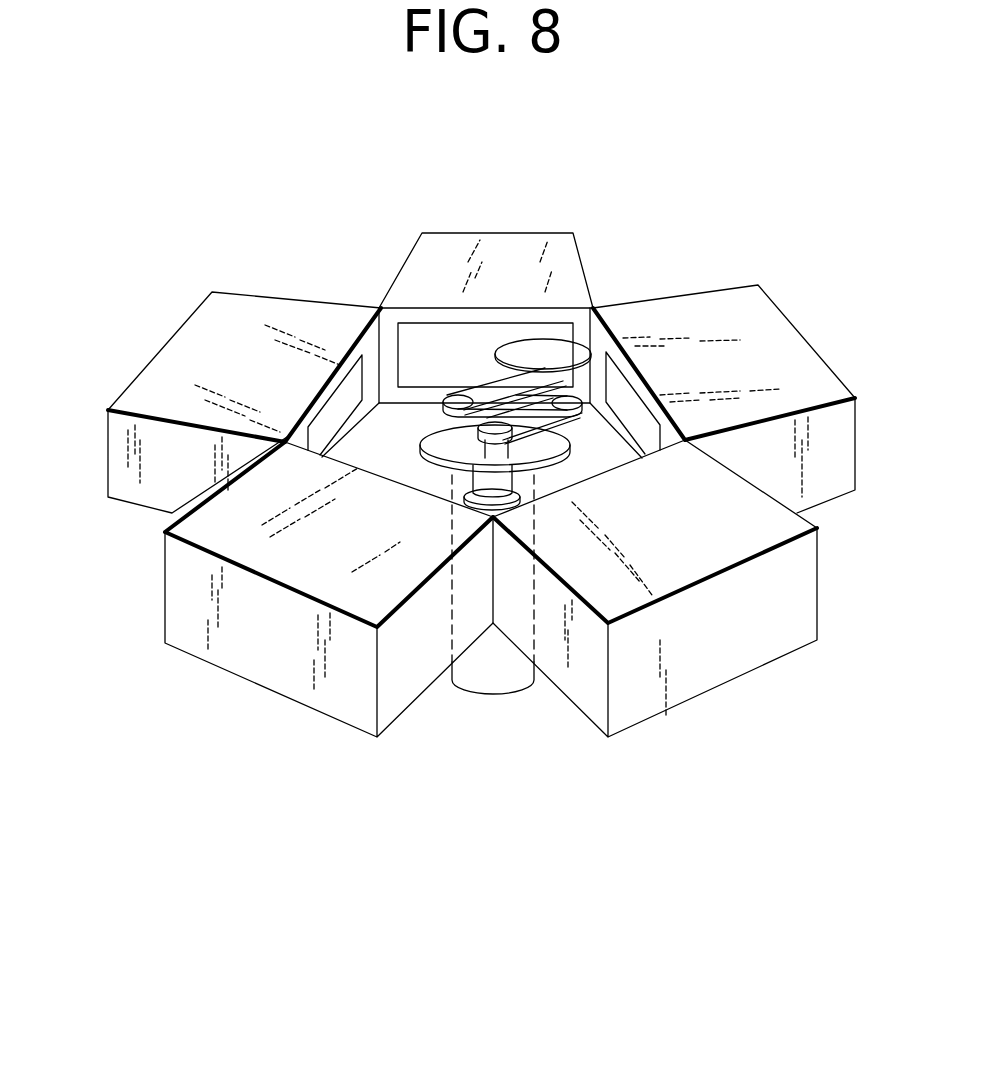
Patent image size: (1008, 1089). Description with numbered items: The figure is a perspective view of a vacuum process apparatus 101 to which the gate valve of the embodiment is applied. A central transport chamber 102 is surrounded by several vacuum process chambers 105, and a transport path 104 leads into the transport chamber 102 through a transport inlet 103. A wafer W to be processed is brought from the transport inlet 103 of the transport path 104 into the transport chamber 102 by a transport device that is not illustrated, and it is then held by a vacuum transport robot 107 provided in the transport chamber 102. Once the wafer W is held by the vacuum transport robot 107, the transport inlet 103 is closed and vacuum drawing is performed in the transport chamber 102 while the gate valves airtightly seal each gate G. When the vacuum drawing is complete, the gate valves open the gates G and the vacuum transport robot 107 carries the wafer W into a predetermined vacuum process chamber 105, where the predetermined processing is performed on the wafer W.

The vacuum process apparatus 101 is at (517, 787).
The transport chamber 102 is at (388, 452).
The transport inlet 103 is at (446, 357).
The transport path 104 is at (495, 247).
The vacuum process chamber 105 is at (248, 323).
The vacuum transport robot 107 is at (491, 490).
The gate G is at (343, 400).
The wafer W is at (543, 350).